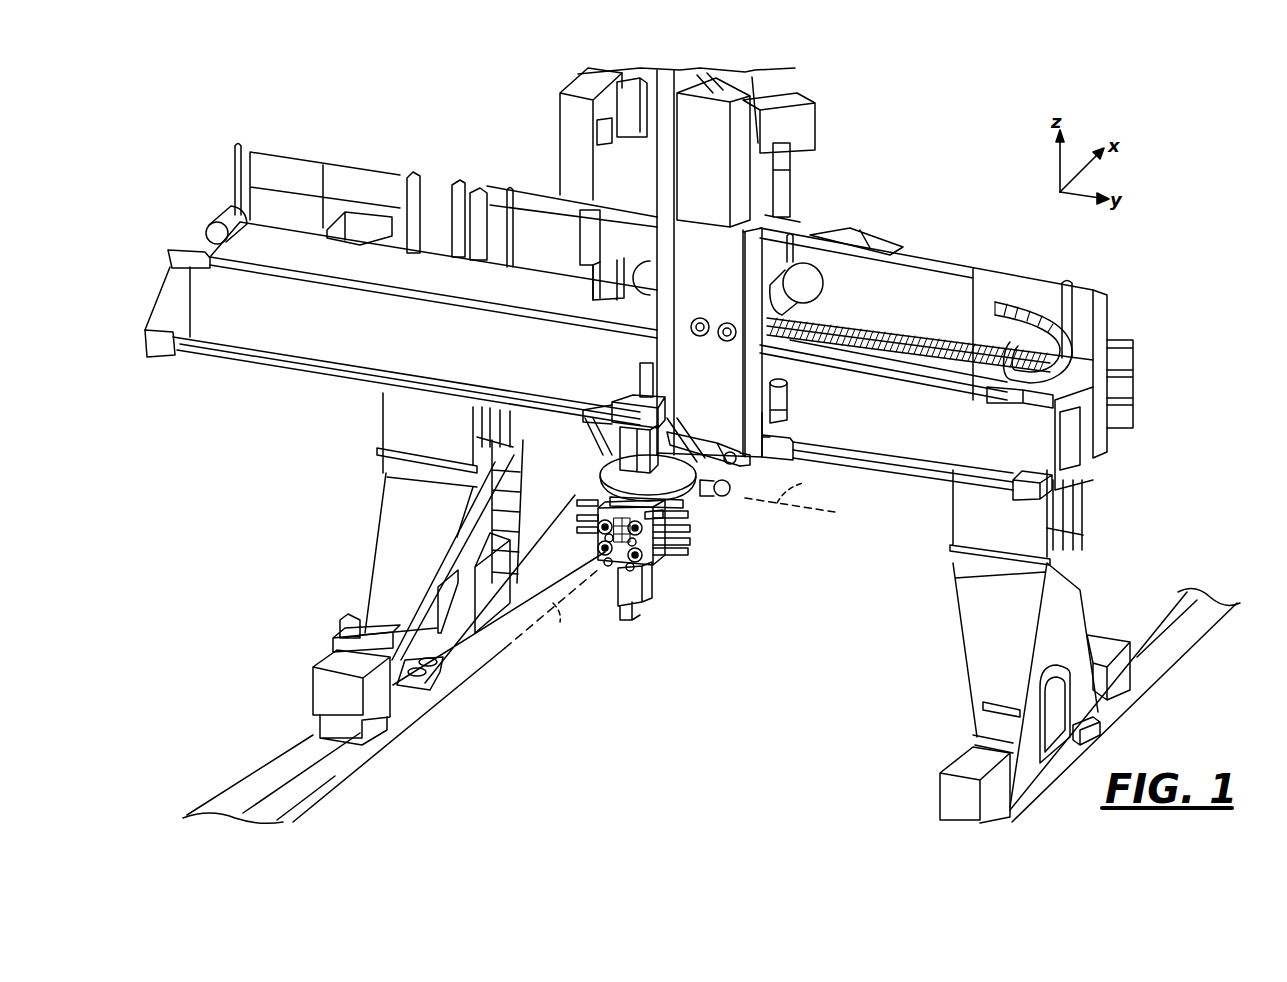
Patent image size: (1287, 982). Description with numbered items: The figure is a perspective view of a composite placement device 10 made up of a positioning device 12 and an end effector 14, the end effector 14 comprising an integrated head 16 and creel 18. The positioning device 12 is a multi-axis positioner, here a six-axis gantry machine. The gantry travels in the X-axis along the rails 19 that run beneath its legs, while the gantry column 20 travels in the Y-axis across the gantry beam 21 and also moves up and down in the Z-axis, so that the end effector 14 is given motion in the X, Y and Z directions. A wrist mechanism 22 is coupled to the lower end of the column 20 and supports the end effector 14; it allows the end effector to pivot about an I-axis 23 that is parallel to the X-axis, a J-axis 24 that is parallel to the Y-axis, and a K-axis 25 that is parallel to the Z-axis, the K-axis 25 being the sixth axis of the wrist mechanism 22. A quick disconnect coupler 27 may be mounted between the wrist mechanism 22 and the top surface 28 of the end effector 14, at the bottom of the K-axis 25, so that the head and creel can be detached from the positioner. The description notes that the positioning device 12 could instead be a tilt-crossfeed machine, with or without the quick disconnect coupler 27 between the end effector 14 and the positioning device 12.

The composite placement device 10 is at (905, 176).
The positioning device 12 is at (372, 340).
The end effector 14 is at (575, 527).
The integrated head 16 is at (670, 588).
The creel 18 is at (706, 543).
The rails 19 is at (313, 766).
The gantry column 20 is at (688, 356).
The gantry beam 21 is at (913, 442).
The wrist mechanism 22 is at (721, 432).
The I-axis 23 is at (552, 611).
The J-axis 24 is at (792, 494).
The K-axis 25 is at (640, 380).
The quick disconnect coupler 27 is at (632, 496).
The top surface 28 is at (668, 492).